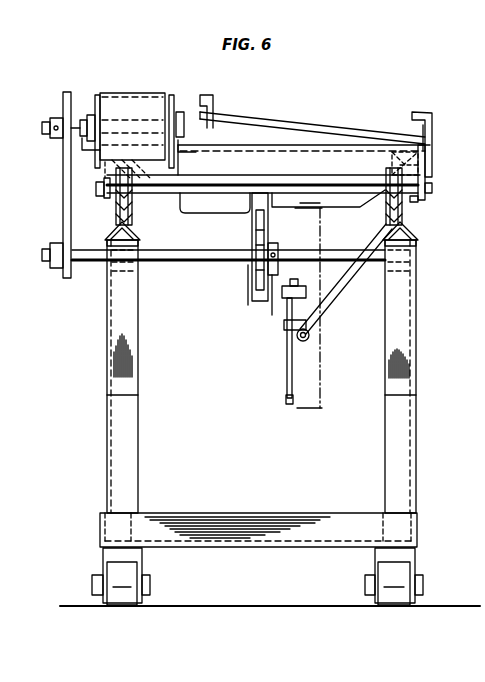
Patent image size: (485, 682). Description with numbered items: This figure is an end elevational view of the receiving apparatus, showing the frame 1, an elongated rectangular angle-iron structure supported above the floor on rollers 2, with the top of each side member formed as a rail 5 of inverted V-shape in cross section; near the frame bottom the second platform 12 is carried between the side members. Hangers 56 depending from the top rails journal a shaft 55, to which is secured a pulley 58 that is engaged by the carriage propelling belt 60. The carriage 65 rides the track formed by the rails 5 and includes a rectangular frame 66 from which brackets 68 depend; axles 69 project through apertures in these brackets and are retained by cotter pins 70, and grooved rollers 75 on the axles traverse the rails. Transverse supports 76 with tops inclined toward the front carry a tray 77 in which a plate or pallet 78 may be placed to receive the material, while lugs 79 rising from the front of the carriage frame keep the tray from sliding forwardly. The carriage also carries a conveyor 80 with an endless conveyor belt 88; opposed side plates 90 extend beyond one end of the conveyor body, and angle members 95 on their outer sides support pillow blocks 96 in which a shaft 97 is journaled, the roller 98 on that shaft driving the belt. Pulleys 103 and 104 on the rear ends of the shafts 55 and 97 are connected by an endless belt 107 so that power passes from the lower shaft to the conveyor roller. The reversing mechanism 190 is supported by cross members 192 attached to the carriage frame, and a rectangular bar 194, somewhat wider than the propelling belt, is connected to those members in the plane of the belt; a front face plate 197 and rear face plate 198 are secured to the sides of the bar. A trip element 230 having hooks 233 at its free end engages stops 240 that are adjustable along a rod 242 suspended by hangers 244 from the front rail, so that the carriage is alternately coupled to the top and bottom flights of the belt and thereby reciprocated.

The frame 1 is at (105, 434).
The rollers 2 is at (128, 576).
The rail 5 is at (139, 231).
The second platform 12 is at (308, 321).
The shaft 55 is at (232, 262).
The hangers 56 is at (136, 268).
The pulley 58 is at (254, 244).
The carriage propelling belt 60 is at (255, 285).
The carriage 65 is at (247, 145).
The rectangular frame 66 is at (423, 168).
The brackets 68 is at (422, 200).
The axles 69 is at (212, 207).
The cotter pins 70 is at (432, 188).
The grooved rollers 75 is at (133, 207).
The supports 76 is at (250, 147).
The tray 77 is at (208, 100).
The plate or pallet 78 is at (315, 125).
The lugs 79 is at (432, 133).
The conveyor 80 is at (93, 98).
The endless conveyor belt 88 is at (143, 104).
The side plates 90 is at (100, 106).
The angle members 95 is at (85, 152).
The pillow blocks 96 is at (76, 135).
The shaft 97 is at (50, 124).
The roller 98 is at (112, 100).
The pulley 103 is at (62, 278).
The pulley 104 is at (65, 96).
The endless belt 107 is at (100, 186).
The reversing mechanism 190 is at (294, 254).
The cross members 192 is at (242, 208).
The rectangular bar 194 is at (268, 210).
The front face plate 197 is at (272, 312).
The rear face plate 198 is at (248, 303).
The trip element 230 is at (285, 368).
The hooks 233 is at (286, 400).
The stops 240 is at (303, 320).
The rod 242 is at (309, 340).
The hangers 244 is at (336, 312).